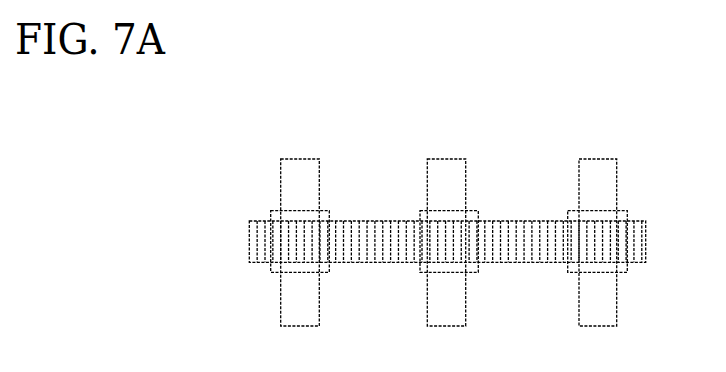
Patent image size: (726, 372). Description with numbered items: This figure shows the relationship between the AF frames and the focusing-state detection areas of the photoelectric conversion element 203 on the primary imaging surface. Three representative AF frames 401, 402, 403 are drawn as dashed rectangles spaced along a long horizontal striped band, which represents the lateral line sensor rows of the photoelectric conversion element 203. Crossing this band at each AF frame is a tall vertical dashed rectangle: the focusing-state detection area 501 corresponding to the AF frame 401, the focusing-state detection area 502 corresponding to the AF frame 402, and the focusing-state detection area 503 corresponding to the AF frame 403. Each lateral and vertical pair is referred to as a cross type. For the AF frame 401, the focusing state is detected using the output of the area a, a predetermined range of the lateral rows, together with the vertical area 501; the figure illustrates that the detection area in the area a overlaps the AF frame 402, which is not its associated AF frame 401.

The photoelectric conversion element 203 is at (646, 250).
The area a is at (353, 263).
The AF frame 401 is at (329, 211).
The AF frame 402 is at (478, 211).
The AF frame 403 is at (627, 211).
The focusing-state detection area 501 is at (301, 159).
The focusing-state detection area 502 is at (447, 159).
The focusing-state detection area 503 is at (596, 159).